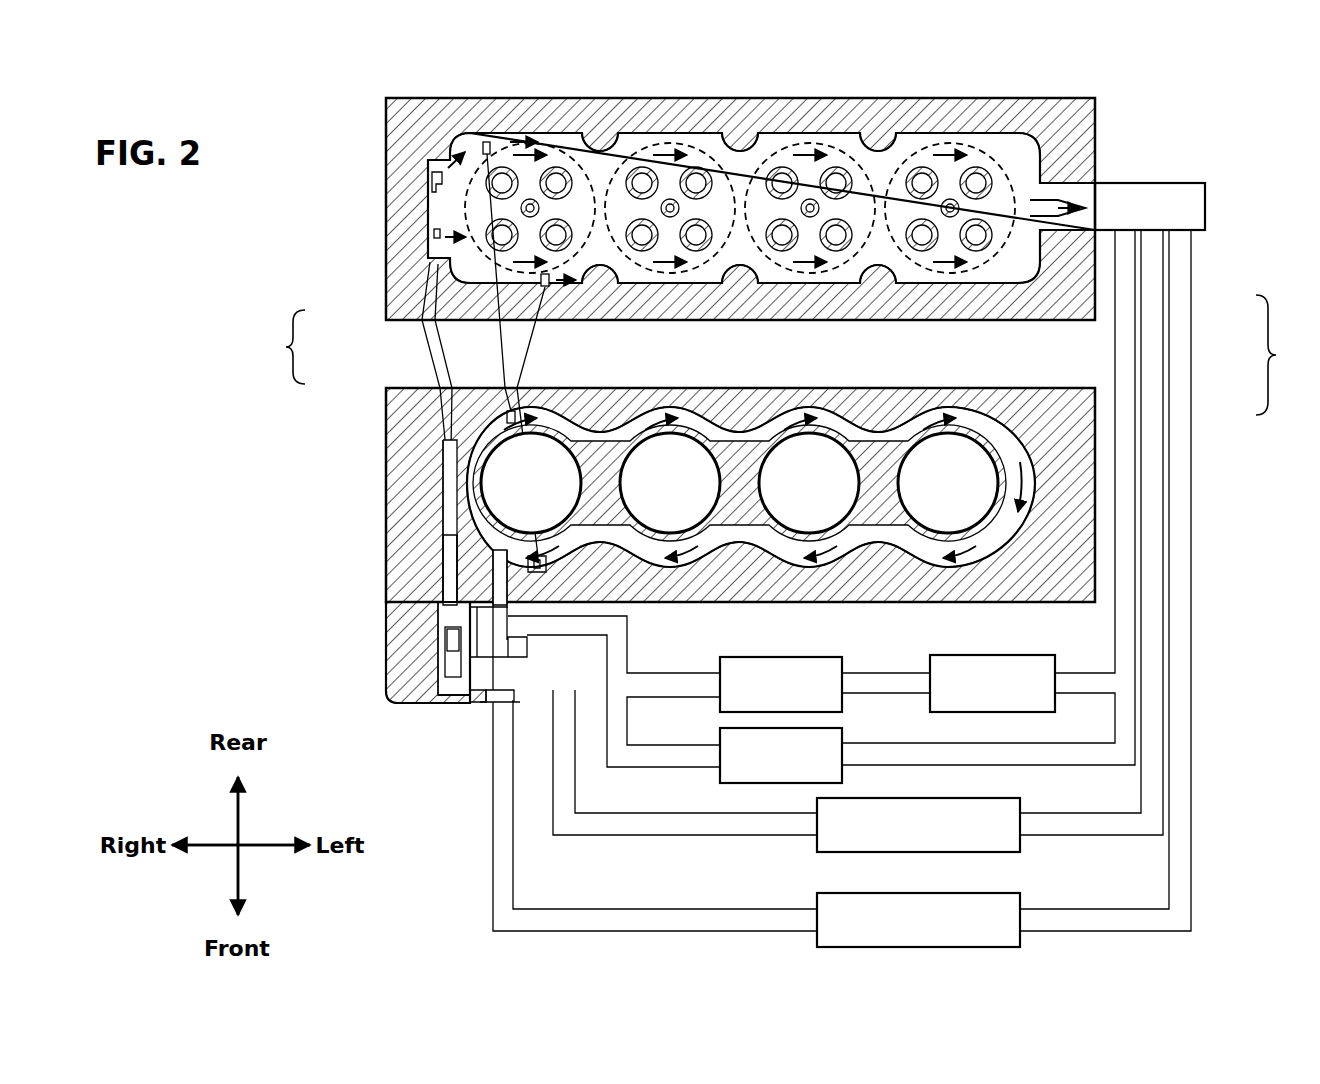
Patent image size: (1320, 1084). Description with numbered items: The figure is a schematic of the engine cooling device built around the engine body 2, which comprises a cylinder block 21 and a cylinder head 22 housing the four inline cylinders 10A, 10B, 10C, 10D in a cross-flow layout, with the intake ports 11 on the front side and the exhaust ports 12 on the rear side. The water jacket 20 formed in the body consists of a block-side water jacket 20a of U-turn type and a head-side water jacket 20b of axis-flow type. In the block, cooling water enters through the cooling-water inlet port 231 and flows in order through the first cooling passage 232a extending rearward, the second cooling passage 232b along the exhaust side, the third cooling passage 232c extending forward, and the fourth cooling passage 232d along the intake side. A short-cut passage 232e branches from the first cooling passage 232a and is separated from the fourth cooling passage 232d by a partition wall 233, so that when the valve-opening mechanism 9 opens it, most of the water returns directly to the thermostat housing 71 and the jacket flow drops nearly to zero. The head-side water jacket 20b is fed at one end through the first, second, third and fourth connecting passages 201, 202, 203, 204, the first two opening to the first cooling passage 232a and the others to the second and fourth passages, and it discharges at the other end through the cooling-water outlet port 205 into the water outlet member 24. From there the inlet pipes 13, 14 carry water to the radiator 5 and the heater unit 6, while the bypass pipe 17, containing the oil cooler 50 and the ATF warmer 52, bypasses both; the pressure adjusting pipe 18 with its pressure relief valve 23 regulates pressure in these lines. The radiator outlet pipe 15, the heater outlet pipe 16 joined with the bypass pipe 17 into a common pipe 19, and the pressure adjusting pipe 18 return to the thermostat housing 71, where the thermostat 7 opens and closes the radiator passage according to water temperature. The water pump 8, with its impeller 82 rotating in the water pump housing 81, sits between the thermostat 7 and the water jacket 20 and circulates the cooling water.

The engine body 2 is at (281, 347).
The cylinder block 21 is at (386, 392).
The cylinder head 22 is at (386, 302).
The intake ports 11 is at (948, 321).
The exhaust ports 12 is at (986, 143).
The cylinder 10A is at (531, 483).
The cylinder 10B is at (670, 483).
The cylinder 10C is at (809, 483).
The cylinder 10D is at (948, 483).
The water jacket 20 is at (1286, 355).
The block-side water jacket 20a is at (1036, 440).
The head-side water jacket 20b is at (1005, 268).
The first connecting passage 201 is at (434, 233).
The second connecting passage 202 is at (432, 176).
The third connecting passage 203 is at (486, 142).
The fourth connecting passage 204 is at (545, 287).
The cooling-water outlet port 205 is at (1095, 182).
The cooling-water inlet port 231 is at (455, 600).
The first cooling passage 232a is at (447, 482).
The second cooling passage 232b is at (715, 420).
The third cooling passage 232c is at (1010, 440).
The fourth cooling passage 232d is at (765, 560).
The short-cut passage 232e is at (462, 537).
The partition wall 233 is at (520, 618).
The water outlet member 24 is at (1158, 183).
The radiator 5 is at (940, 895).
The heater unit 6 is at (842, 738).
The thermostat 7 is at (500, 702).
The thermostat housing 71 is at (478, 703).
The water pump 8 is at (447, 703).
The water pump housing 81 is at (440, 690).
The impeller 82 is at (445, 660).
The valve-opening mechanism 9 is at (447, 633).
The inlet pipe 13 is at (1078, 908).
The inlet pipe 14 is at (1072, 743).
The radiator outlet pipe 15 is at (608, 908).
The heater outlet pipe 16 is at (660, 745).
The bypass pipe 17 is at (697, 672).
The pressure adjusting pipe 18 is at (685, 787).
The common pipe 19 is at (568, 628).
The pressure relief valve 23 is at (1025, 803).
The oil cooler 50 is at (800, 657).
The ATF warmer 52 is at (975, 656).